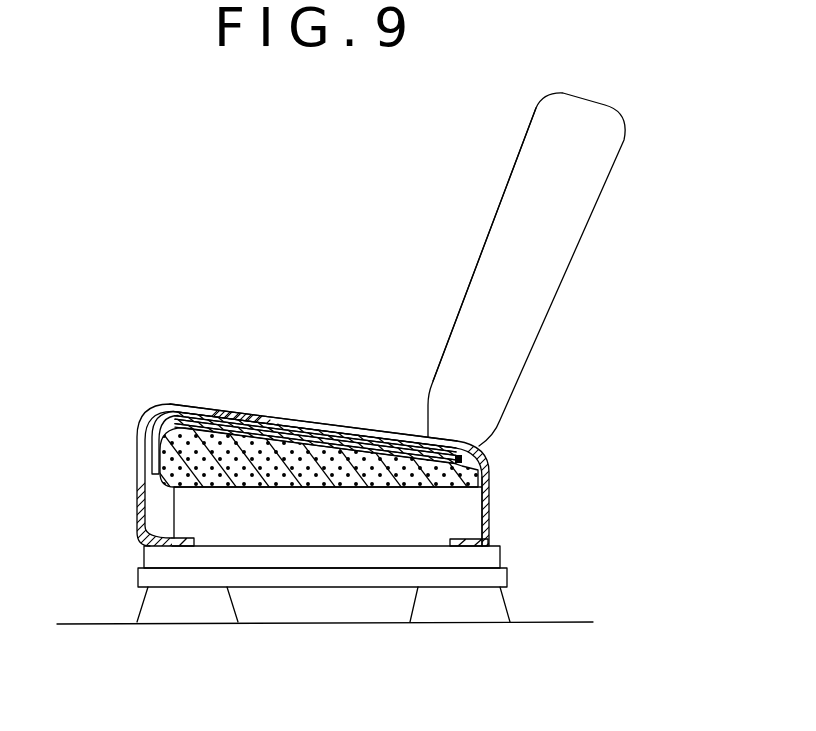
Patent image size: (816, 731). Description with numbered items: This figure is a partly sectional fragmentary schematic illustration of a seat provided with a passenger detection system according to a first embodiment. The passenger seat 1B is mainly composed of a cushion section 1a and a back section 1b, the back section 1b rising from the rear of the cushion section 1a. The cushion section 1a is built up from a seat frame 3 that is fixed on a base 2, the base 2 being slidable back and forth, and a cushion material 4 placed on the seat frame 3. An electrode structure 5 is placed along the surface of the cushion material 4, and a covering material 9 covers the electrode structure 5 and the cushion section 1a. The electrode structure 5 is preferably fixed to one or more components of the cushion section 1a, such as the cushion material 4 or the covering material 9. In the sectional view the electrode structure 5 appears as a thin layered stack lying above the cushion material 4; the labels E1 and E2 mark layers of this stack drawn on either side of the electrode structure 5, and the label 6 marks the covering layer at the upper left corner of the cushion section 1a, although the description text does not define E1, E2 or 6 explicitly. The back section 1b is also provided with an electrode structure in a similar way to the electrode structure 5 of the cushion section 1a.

The passenger seat 1B is at (600, 203).
The back section 1b is at (502, 208).
The cushion section 1a is at (182, 403).
The first electrode E1 is at (248, 420).
The electrode structure 5 is at (315, 428).
The second electrode E2 is at (390, 435).
The cover sheet 6 is at (155, 410).
The covering material 9 is at (137, 508).
The cushion material 4 is at (187, 463).
The seat frame 3 is at (470, 523).
The base 2 is at (500, 562).